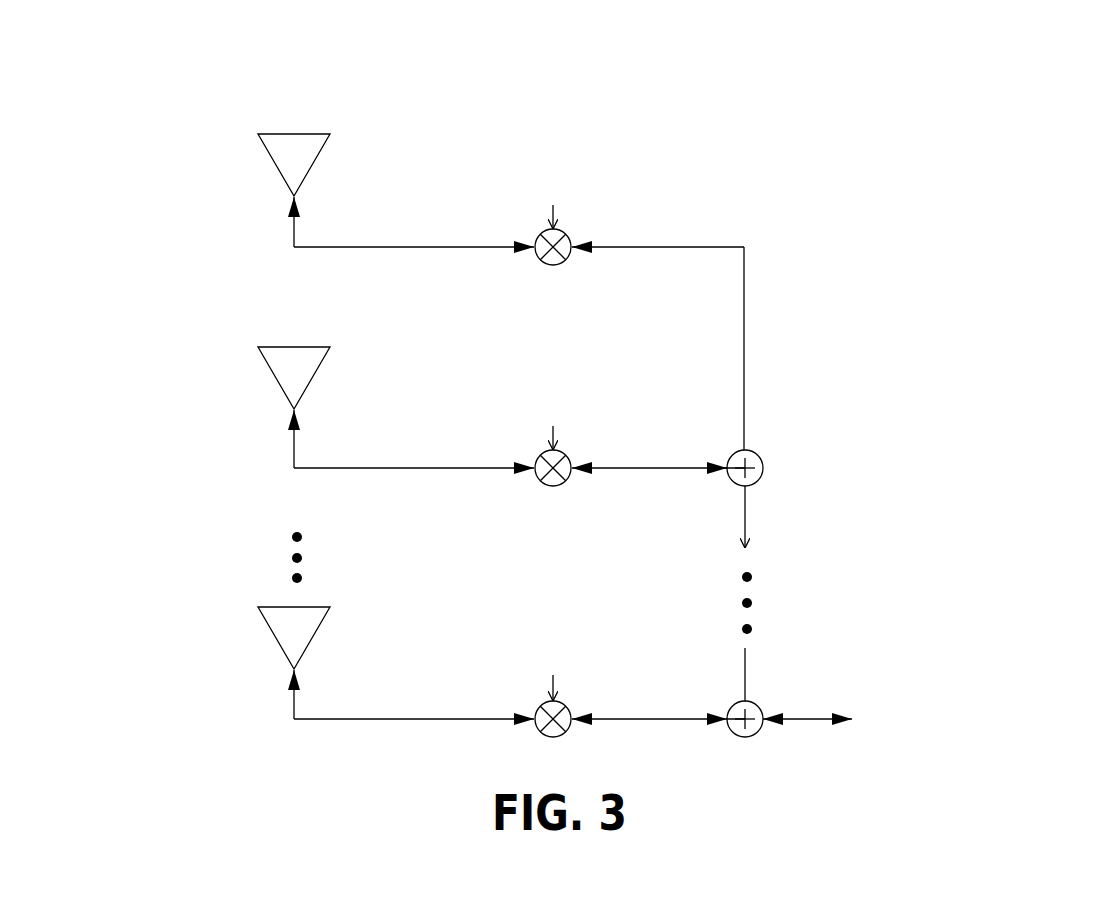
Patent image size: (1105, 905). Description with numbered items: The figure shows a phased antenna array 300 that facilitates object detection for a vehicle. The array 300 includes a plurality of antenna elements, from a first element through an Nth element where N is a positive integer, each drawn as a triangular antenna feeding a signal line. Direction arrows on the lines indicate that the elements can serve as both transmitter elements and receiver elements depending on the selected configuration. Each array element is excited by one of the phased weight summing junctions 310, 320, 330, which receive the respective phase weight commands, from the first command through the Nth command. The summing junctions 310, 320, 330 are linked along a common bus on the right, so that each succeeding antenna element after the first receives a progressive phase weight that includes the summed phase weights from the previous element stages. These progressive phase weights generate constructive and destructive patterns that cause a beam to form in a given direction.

The phased antenna array 300 is at (985, 70).
The phased weight summing junction 310 is at (565, 232).
The phased weight summing junction 320 is at (565, 452).
The phased weight summing junction 330 is at (565, 703).